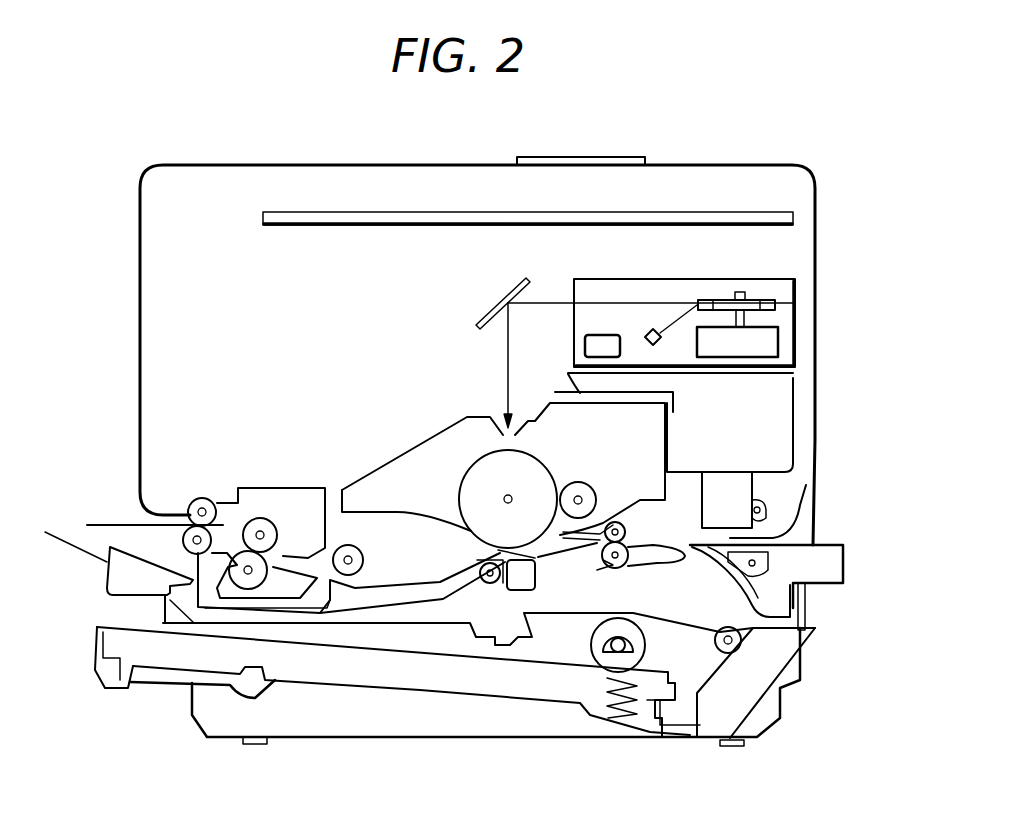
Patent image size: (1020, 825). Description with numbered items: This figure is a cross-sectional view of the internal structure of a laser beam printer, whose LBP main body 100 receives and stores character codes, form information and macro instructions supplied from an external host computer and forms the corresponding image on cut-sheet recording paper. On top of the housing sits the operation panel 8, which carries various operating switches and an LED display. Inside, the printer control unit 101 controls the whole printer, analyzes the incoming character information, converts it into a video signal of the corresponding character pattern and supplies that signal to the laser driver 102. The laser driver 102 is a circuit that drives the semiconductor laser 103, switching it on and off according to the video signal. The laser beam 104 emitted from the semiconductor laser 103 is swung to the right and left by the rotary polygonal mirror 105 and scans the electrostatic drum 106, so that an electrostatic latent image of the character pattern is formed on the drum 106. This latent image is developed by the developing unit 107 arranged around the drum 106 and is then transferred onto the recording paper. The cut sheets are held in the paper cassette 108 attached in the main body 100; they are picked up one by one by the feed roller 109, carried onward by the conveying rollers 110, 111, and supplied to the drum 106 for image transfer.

The operation panel 8 is at (593, 157).
The laser beam printer main body 100 is at (742, 167).
The printer control unit 101 is at (795, 218).
The laser driver 102 is at (585, 341).
The semiconductor laser 103 is at (660, 342).
The laser beam 104 is at (633, 303).
The rotary polygonal mirror 105 is at (795, 303).
The electrostatic drum 106 is at (477, 458).
The developing unit 107 is at (370, 482).
The paper cassette 108 is at (92, 672).
The feed roller 109 is at (600, 645).
The conveying roller 110 is at (745, 645).
The conveying roller 111 is at (615, 573).